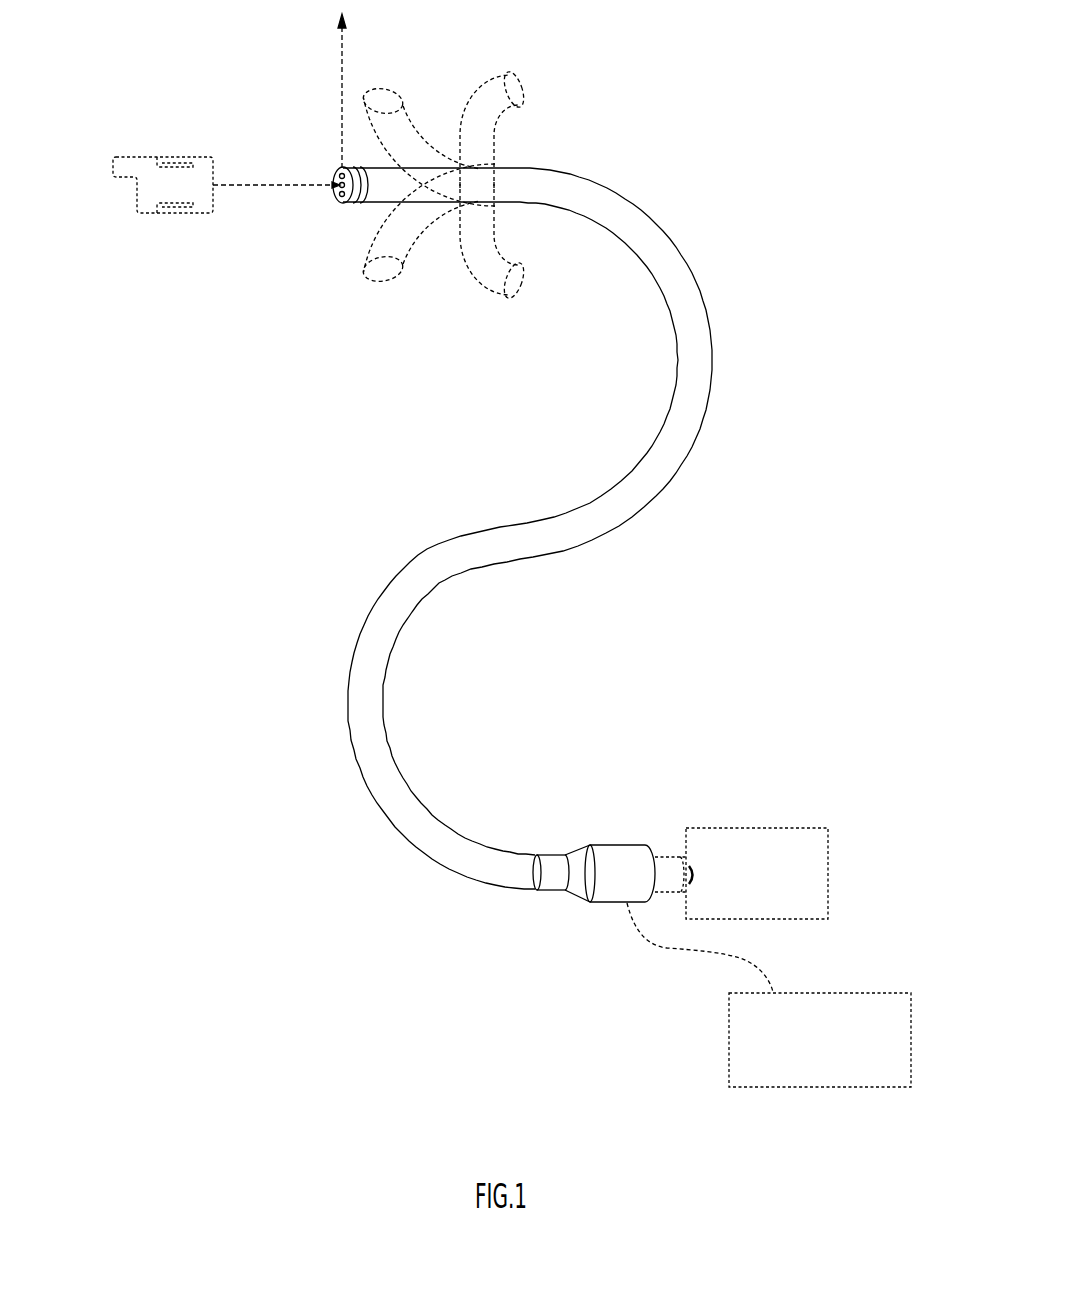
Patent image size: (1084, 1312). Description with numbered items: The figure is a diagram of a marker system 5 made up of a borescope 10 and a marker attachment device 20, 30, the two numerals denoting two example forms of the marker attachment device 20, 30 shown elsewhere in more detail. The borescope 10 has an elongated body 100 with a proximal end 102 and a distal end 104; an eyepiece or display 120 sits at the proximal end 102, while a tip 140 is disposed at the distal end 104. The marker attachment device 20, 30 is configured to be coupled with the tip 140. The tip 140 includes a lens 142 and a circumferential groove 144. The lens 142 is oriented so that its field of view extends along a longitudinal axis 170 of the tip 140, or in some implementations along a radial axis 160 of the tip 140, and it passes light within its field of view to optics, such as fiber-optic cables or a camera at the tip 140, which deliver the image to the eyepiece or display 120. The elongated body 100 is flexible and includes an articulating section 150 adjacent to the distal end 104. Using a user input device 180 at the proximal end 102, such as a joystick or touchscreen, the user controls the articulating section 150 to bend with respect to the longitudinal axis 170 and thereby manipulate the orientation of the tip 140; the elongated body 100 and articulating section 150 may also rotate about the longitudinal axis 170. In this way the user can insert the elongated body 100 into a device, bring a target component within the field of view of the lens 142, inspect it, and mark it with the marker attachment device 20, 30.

The marker system 5 is at (801, 107).
The borescope 10 is at (744, 308).
The marker attachment device 20 is at (149, 143).
The marker attachment device 30 is at (135, 156).
The elongated body 100 is at (688, 460).
The proximal end 102 is at (547, 852).
The distal end 104 is at (338, 197).
The eyepiece or display 120 is at (705, 828).
The tip 140 is at (362, 203).
The lens 142 is at (339, 181).
The circumferential groove 144 is at (343, 175).
The articulating section 150 is at (552, 123).
The radial axis 160 is at (340, 90).
The longitudinal axis 170 is at (254, 186).
The user input device 180 is at (802, 1087).